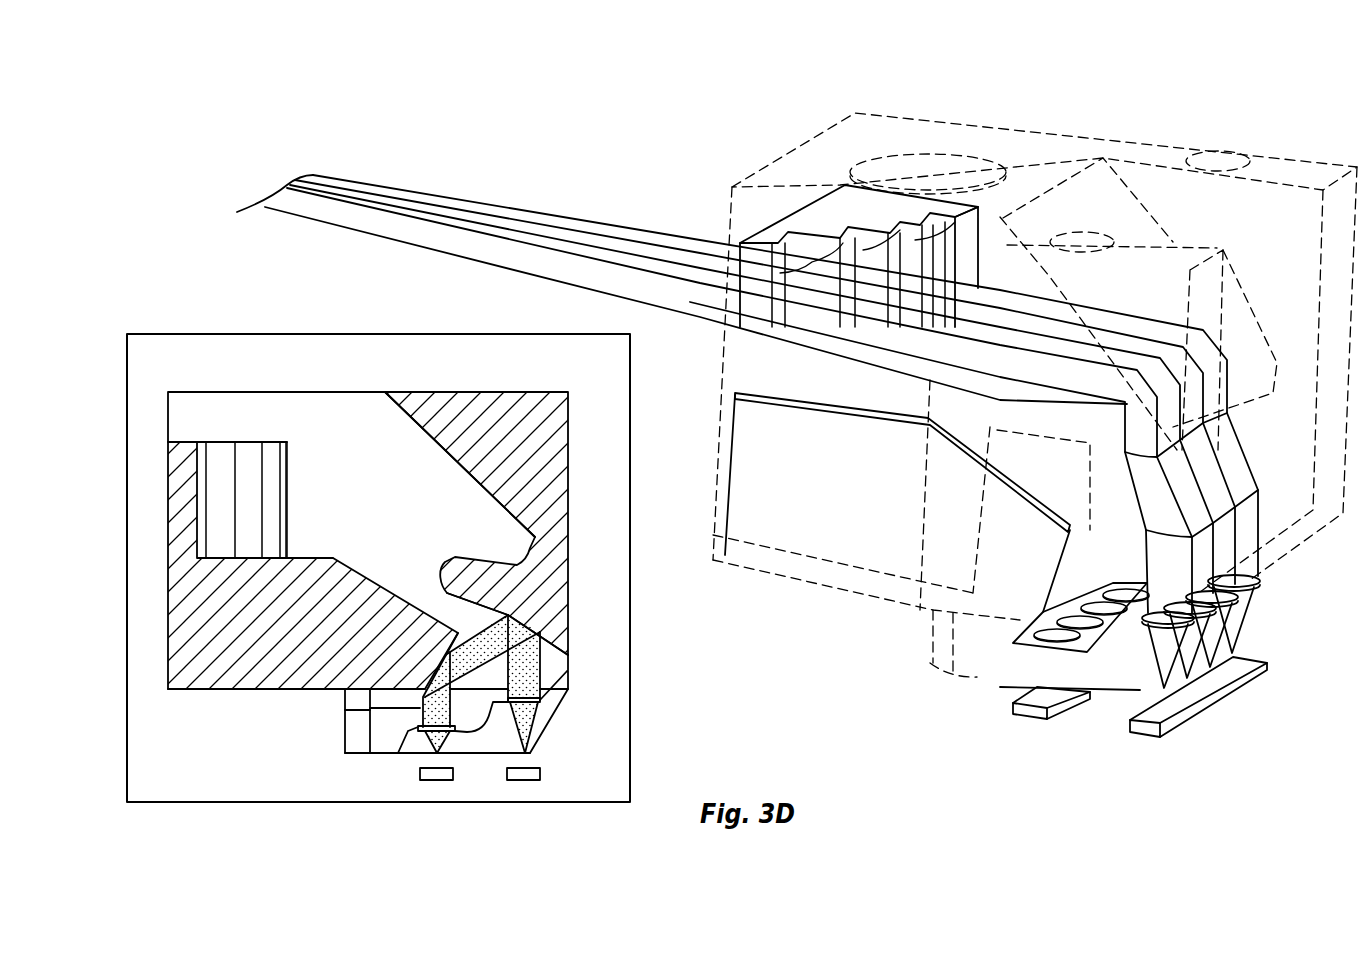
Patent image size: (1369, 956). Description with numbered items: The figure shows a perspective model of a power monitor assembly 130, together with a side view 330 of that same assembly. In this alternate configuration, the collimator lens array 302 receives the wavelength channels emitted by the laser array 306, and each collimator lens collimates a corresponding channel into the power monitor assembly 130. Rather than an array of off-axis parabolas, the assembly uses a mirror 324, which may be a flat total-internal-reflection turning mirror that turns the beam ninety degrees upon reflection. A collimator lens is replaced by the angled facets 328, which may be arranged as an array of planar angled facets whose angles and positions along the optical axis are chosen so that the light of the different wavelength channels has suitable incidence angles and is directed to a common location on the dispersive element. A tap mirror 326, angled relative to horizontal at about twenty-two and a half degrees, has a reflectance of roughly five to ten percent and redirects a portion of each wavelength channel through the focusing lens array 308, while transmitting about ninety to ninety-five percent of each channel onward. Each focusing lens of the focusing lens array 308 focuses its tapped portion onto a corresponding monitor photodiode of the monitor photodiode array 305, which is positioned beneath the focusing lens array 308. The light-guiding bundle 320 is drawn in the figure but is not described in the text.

The power monitor assembly 130 is at (535, 366).
The collimator lens array 302 is at (543, 730).
The monitor photodiode array 305 is at (1010, 710).
The laser array 306 is at (526, 778).
The focusing lens array 308 is at (411, 740).
The light pipe bundle 320 is at (542, 212).
The mirror 324 is at (393, 403).
The tap mirror 326 is at (445, 590).
The angled facets 328 is at (203, 485).
The side view 330 is at (599, 377).